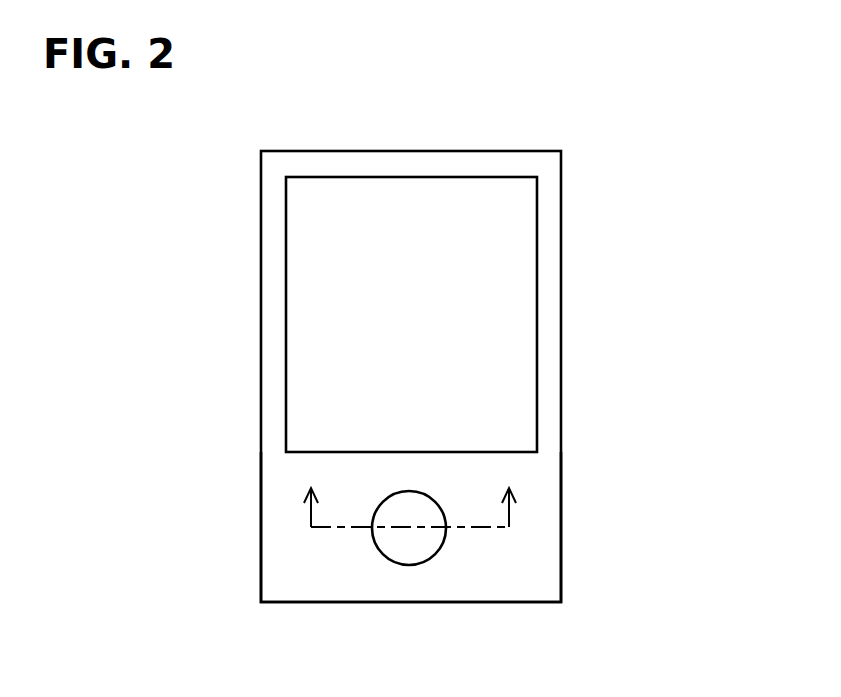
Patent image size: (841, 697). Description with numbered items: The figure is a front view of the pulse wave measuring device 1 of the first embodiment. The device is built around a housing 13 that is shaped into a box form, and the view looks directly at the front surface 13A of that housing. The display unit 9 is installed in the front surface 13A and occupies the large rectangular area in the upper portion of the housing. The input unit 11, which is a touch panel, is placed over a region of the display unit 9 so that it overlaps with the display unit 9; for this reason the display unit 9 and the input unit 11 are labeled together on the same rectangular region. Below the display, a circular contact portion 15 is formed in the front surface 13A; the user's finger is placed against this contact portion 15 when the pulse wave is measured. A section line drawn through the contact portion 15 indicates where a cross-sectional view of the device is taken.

The pulse wave measuring device 1 is at (433, 364).
The display unit 9 is at (411, 270).
The input unit 11 is at (408, 198).
The housing 13 is at (298, 150).
The front surface 13A is at (272, 516).
The contact portion 15 is at (410, 546).